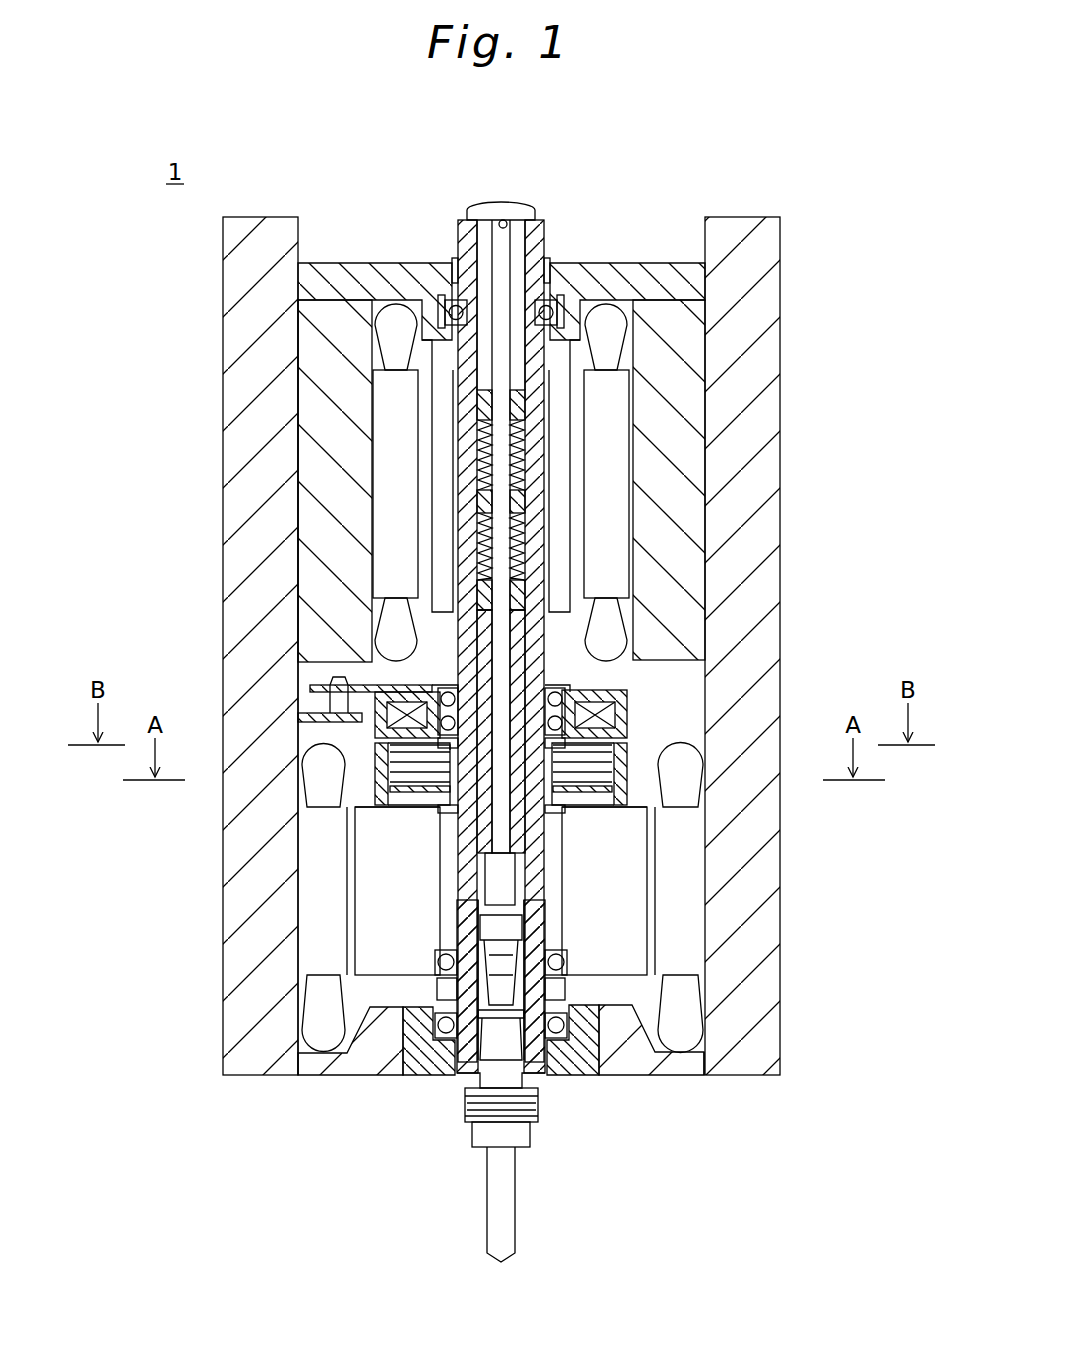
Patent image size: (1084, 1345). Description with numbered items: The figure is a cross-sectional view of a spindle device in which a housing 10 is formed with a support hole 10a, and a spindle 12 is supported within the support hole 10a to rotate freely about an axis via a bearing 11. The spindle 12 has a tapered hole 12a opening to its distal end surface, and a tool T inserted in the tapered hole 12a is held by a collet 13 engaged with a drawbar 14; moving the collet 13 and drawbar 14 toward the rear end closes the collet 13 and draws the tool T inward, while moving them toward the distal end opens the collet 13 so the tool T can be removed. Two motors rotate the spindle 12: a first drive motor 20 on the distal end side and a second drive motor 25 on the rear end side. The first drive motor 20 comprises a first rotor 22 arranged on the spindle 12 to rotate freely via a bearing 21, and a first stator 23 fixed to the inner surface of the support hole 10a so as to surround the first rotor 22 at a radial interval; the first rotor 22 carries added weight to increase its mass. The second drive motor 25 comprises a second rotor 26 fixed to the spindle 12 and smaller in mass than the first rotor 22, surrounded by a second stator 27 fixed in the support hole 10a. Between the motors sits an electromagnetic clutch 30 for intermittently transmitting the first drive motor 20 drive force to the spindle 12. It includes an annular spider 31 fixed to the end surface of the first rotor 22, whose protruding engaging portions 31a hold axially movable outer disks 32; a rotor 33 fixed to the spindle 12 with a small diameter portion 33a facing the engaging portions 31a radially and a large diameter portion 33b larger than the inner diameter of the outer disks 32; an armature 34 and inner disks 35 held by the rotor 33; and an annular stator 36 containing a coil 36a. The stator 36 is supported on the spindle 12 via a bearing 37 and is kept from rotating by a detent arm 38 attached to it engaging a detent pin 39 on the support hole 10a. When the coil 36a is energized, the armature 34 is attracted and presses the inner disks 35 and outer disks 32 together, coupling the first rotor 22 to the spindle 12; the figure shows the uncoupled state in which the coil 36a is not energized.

The housing 10 is at (232, 952).
The support hole 10a is at (312, 907).
The bearing 11 is at (550, 275).
The spindle 12 is at (545, 1082).
The tapered hole 12a is at (518, 1070).
The collet 13 is at (440, 962).
The drawbar 14 is at (514, 876).
The first drive motor 20 is at (728, 908).
The bearing 21 is at (444, 808).
The first rotor 22 is at (392, 968).
The first stator 23 is at (307, 952).
The second drive motor 25 is at (660, 472).
The second rotor 26 is at (440, 390).
The second stator 27 is at (375, 418).
The electromagnetic clutch 30 is at (380, 690).
The spider 31 is at (614, 810).
The engaging portions 31a is at (375, 775).
The outer disks 32 is at (615, 712).
The rotor 33 is at (501, 527).
The small diameter portion 33a is at (530, 760).
The large diameter portion 33b is at (562, 745).
The armature 34 is at (578, 795).
The inner disks 35 is at (402, 790).
The stator 36 is at (595, 720).
The coil 36a is at (624, 745).
The bearing 37 is at (445, 690).
The detent arm 38 is at (312, 688).
The detent pin 39 is at (300, 712).
The tool T is at (482, 1132).